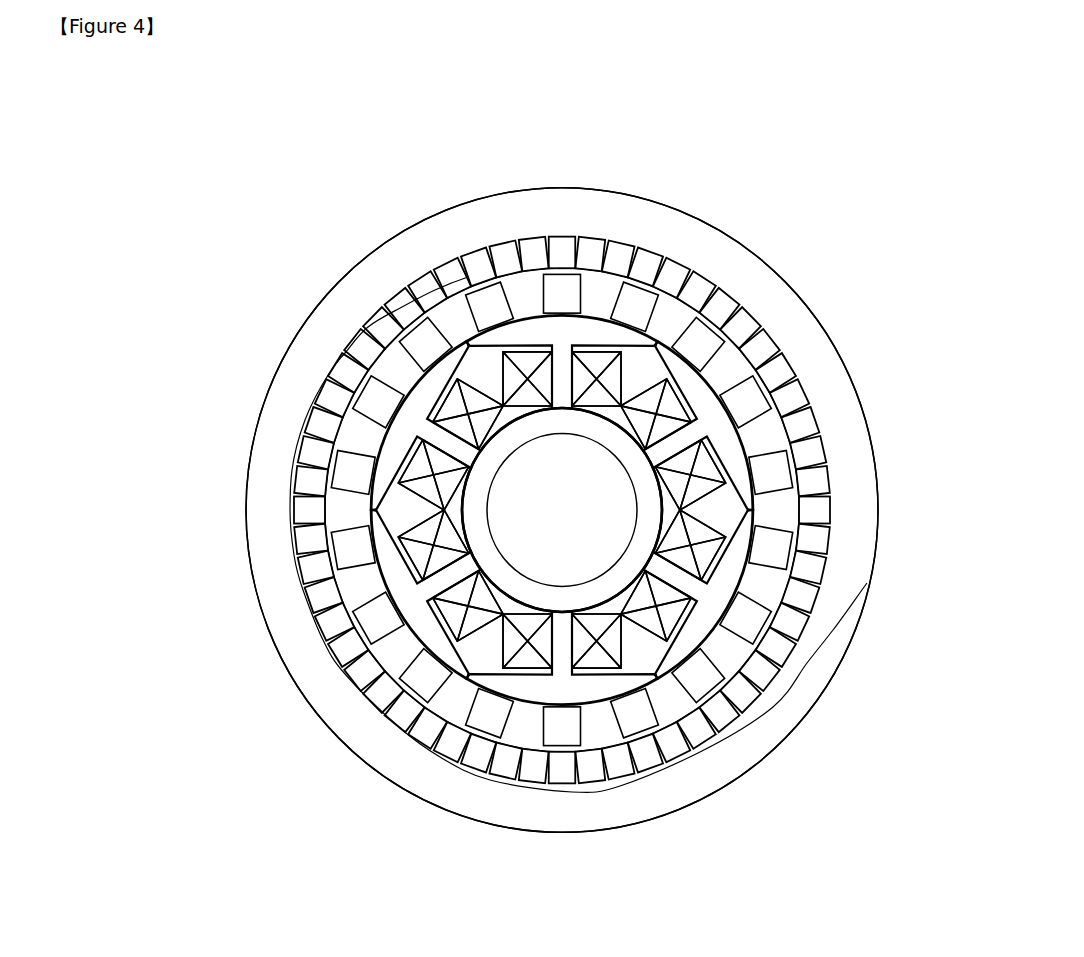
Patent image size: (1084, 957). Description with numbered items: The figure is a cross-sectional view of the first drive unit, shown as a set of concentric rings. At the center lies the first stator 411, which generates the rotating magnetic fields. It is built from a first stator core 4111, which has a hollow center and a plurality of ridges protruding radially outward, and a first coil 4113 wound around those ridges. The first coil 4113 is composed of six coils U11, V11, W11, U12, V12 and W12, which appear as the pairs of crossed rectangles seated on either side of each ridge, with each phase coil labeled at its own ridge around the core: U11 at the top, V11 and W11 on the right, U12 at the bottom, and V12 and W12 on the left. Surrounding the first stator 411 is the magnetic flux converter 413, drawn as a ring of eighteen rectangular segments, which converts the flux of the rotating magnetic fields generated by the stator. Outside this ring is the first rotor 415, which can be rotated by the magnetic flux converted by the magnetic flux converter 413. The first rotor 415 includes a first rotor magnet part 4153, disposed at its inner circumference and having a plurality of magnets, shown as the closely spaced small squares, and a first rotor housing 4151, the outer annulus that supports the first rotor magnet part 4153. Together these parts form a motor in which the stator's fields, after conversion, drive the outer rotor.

The first stator 411 is at (712, 883).
The first stator core 4111 is at (653, 620).
The first coil 4113 is at (696, 632).
The magnetic flux converter 413 is at (778, 548).
The first rotor 415 is at (902, 229).
The first rotor housing 4151 is at (787, 320).
The first rotor magnet part 4153 is at (742, 327).
The coil U11 is at (557, 363).
The coil V11 is at (683, 433).
The coil W11 is at (693, 633).
The coil U12 is at (568, 657).
The coil V12 is at (440, 585).
The coil W12 is at (435, 440).